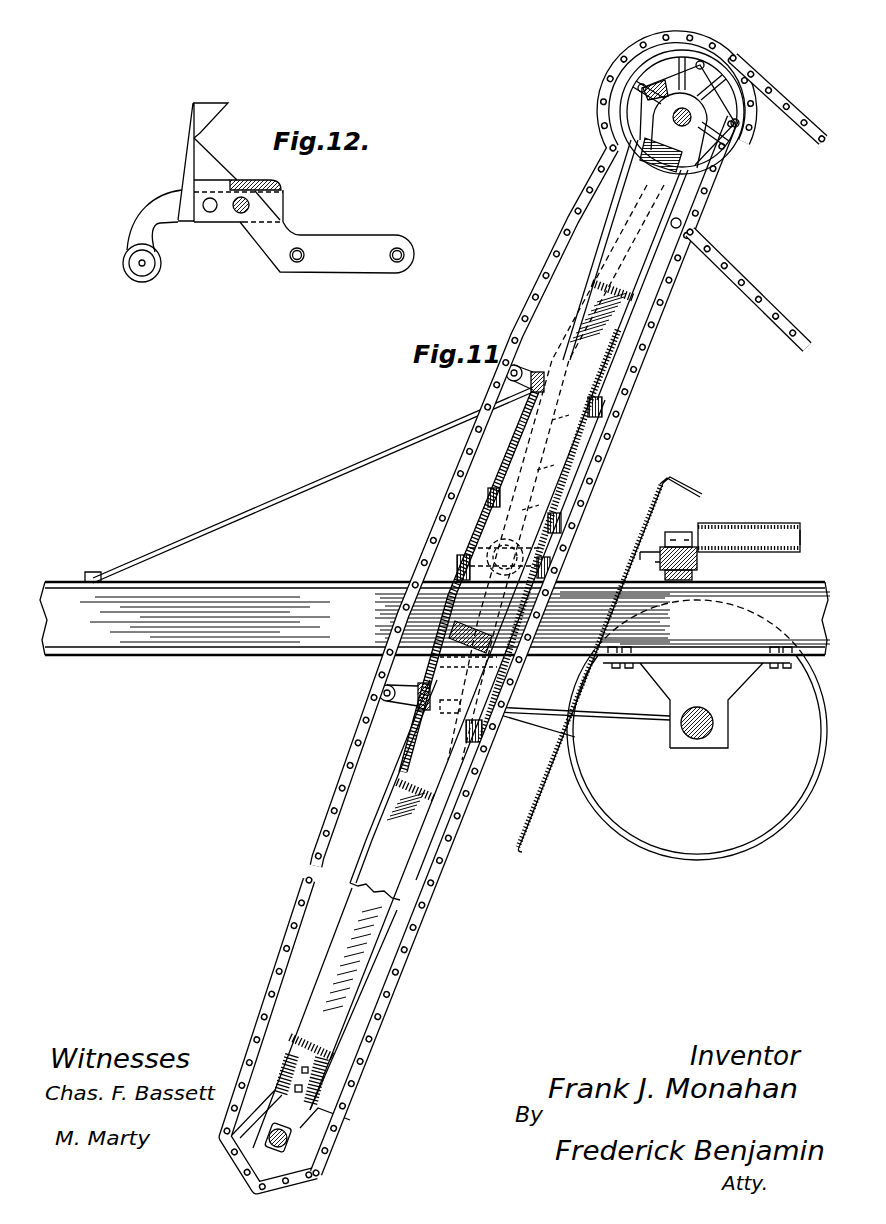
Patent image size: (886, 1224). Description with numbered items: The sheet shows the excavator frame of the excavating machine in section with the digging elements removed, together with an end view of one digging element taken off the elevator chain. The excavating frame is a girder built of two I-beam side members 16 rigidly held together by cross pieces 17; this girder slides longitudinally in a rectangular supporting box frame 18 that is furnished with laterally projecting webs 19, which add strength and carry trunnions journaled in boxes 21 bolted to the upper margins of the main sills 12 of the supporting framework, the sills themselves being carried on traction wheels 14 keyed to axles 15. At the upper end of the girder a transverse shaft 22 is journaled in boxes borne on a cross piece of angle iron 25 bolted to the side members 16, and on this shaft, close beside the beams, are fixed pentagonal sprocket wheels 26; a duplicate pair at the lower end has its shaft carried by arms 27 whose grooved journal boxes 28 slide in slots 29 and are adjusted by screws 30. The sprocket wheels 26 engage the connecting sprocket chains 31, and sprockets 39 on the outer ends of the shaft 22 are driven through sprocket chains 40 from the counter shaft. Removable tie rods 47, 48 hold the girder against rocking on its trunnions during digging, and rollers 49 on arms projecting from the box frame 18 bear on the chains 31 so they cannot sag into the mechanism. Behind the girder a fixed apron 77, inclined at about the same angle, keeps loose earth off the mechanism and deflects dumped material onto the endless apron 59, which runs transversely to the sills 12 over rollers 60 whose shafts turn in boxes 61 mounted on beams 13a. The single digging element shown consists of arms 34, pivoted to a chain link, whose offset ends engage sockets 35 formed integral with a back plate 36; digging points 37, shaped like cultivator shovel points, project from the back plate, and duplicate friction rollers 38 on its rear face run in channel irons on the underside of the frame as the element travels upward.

In FIG. 11, the main sills 12 is at (270, 650).
In FIG. 11, the beams 13a is at (697, 561).
In FIG. 11, the wheel 14 is at (617, 838).
In FIG. 11, the axles 15 is at (697, 707).
In FIG. 11, the side members 16 is at (362, 836).
In FIG. 11, the cross pieces 17 is at (614, 286).
In FIG. 11, the supporting box or frame 18 is at (524, 420).
In FIG. 11, the laterally projecting webs 19 is at (574, 388).
In FIG. 11, the boxes 21 is at (461, 553).
In FIG. 11, the transverse shaft 22 is at (682, 112).
In FIG. 11, the cross piece of angle iron 25 is at (640, 167).
In FIG. 11, the pentagonal sprocket wheels 26 is at (662, 93).
In FIG. 11, the arms 27 is at (257, 1118).
In FIG. 11, the journal boxes 28 is at (272, 1152).
In FIG. 11, the slots 29 is at (315, 1107).
In FIG. 11, the screws 30 is at (315, 1075).
In FIG. 11, the sprocket chains 31 is at (668, 301).
In FIG. 11, the sprockets 39 is at (778, 105).
In FIG. 11, the sprocket chains 40 is at (746, 283).
In FIG. 11, the tie rod 47 is at (309, 485).
In FIG. 11, the tie rod 48 is at (556, 708).
In FIG. 11, the rollers 49 is at (528, 366).
In FIG. 11, the endless apron 59 is at (757, 523).
In FIG. 11, the rollers 60 is at (800, 539).
In FIG. 11, the boxes 61 is at (678, 531).
In FIG. 11, the fixed apron 77 is at (650, 514).
In FIG. 12, the arms 34 is at (360, 273).
In FIG. 12, the sockets 35 is at (253, 175).
In FIG. 12, the back plate 36 is at (190, 152).
In FIG. 12, the digging points 37 is at (207, 103).
In FIG. 12, the friction rollers 38 is at (132, 280).